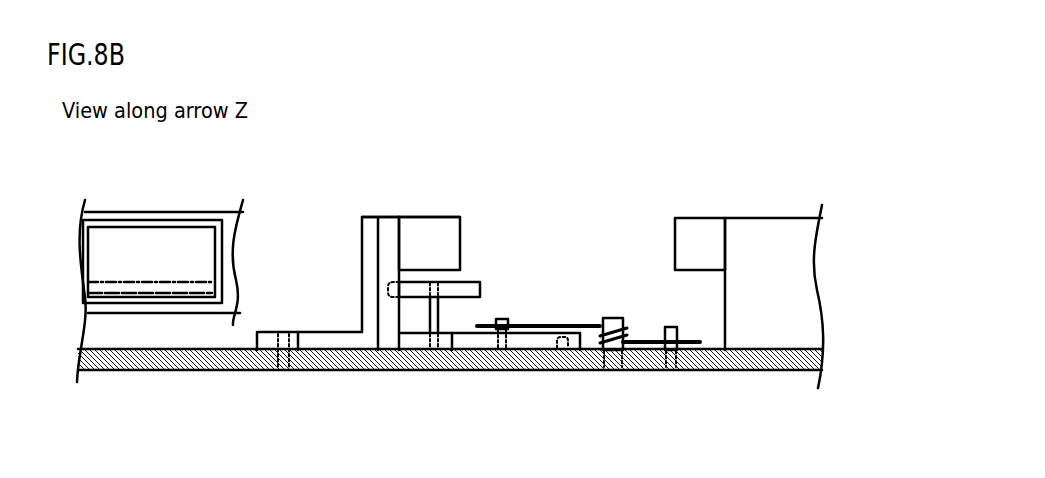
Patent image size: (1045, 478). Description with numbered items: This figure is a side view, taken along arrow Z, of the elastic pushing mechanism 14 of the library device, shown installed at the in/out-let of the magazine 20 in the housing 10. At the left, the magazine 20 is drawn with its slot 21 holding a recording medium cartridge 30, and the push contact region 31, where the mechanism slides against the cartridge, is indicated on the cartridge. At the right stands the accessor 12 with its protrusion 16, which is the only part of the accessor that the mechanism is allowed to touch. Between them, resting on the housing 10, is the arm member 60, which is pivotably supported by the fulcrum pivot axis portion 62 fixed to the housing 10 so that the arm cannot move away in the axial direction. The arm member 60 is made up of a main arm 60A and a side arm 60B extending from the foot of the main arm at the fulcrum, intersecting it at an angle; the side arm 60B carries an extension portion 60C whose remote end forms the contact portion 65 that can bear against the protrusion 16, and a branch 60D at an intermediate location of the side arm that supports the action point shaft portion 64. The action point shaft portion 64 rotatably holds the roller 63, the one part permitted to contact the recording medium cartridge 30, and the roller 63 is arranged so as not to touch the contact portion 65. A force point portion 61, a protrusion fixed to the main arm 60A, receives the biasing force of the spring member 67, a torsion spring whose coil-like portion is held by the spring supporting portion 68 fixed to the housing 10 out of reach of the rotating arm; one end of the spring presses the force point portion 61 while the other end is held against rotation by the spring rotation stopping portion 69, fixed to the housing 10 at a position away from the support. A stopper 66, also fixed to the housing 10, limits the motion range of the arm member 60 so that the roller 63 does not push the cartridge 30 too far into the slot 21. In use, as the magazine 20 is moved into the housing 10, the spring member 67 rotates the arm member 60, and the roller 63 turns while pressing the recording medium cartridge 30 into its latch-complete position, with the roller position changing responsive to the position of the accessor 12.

The housing 10 is at (214, 358).
The accessor 12 is at (772, 228).
The elastic pushing mechanism 14 is at (523, 190).
The protrusion 16 is at (700, 232).
The magazine 20 is at (208, 212).
The slot 21 is at (164, 219).
The recording medium cartridge 30 is at (118, 242).
The push contact region 31 is at (133, 293).
The arm member 60 is at (330, 331).
The main arm 60A is at (487, 338).
The side arm 60B is at (339, 334).
The extension portion 60C is at (370, 228).
The branch 60D is at (445, 336).
The force point portion 61 is at (503, 318).
The fulcrum pivot axis portion 62 is at (300, 335).
The roller 63 is at (470, 288).
The action point shaft portion 64 is at (433, 316).
The contact portion 65 is at (441, 230).
The stopper 66 is at (556, 341).
The spring member 67 is at (553, 325).
The spring supporting portion 68 is at (611, 325).
The spring rotation stopping portion 69 is at (670, 341).